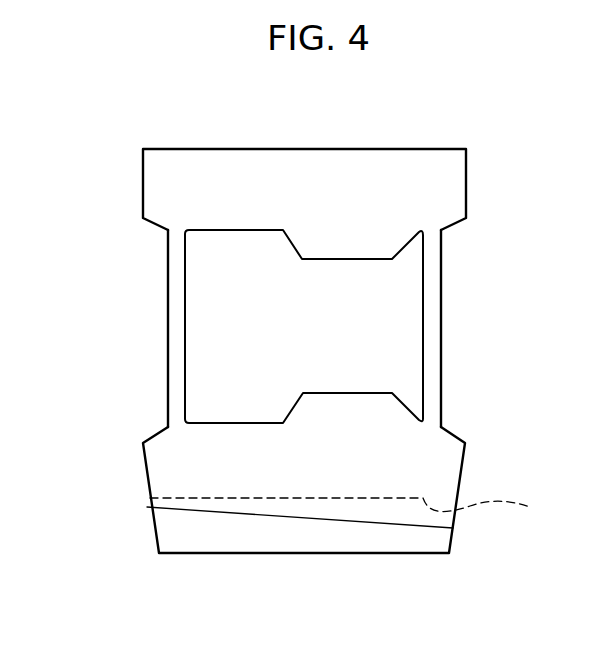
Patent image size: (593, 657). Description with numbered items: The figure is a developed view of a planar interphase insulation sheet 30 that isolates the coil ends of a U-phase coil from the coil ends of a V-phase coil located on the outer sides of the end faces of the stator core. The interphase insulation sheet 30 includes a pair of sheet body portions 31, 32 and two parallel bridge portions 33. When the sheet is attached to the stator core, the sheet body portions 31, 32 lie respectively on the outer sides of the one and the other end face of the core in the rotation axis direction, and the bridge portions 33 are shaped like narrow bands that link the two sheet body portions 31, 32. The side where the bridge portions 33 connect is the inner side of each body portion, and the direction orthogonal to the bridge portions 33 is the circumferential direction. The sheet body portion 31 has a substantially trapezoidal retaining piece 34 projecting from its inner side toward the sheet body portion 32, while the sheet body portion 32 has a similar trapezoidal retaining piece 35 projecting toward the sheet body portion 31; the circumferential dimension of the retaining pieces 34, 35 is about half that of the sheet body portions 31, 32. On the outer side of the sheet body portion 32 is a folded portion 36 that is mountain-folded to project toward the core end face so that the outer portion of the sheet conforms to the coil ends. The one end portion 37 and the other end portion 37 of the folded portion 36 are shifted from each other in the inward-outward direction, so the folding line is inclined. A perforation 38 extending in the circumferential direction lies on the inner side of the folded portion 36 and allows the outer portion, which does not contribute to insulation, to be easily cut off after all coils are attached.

The interphase insulation sheet 30 is at (484, 102).
The sheet body portion 31 is at (168, 160).
The sheet body portion 32 is at (452, 461).
The bridge portion 33 is at (176, 316).
The retaining piece 34 is at (347, 252).
The retaining piece 35 is at (350, 400).
The folded portion 36 is at (305, 518).
The end portion 37 is at (147, 507).
The perforation 38 is at (353, 508).